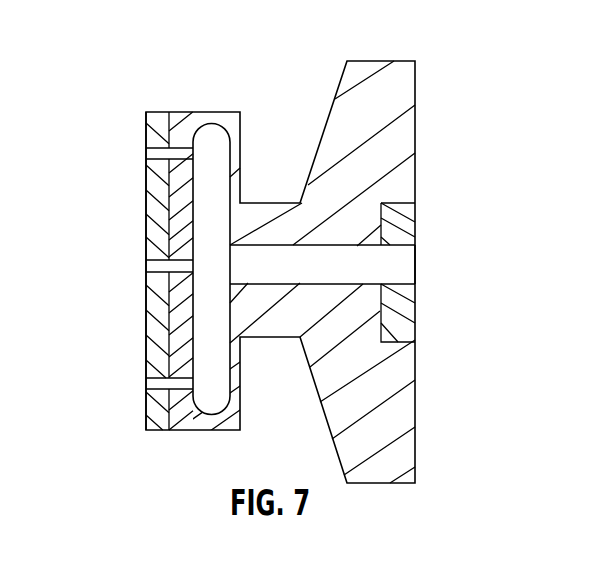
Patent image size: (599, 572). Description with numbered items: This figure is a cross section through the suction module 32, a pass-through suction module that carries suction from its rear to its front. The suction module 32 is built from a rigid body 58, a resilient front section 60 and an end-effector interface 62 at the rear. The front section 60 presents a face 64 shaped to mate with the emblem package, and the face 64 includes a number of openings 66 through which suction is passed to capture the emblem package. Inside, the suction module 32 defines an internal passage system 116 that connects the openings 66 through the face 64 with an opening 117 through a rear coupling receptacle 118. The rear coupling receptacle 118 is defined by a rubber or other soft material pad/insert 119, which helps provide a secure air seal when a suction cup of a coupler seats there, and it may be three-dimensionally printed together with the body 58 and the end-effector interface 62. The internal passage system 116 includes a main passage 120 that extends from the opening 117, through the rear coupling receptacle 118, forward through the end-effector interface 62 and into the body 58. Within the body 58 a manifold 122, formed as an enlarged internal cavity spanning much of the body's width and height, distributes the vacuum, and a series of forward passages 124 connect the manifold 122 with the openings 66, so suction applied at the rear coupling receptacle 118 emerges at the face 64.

The suction module 32 is at (395, 42).
The body 58 is at (205, 112).
The front section 60 is at (158, 112).
The end-effector interface 62 is at (395, 112).
The face 64 is at (147, 335).
The openings 66 is at (147, 152).
The internal passage system 116 is at (272, 265).
The opening 117 is at (415, 265).
The rear coupling receptacle 118 is at (415, 228).
The pad/insert 119 is at (415, 205).
The main passage 120 is at (416, 280).
The manifold 122 is at (208, 412).
The forward passages 124 is at (147, 140).